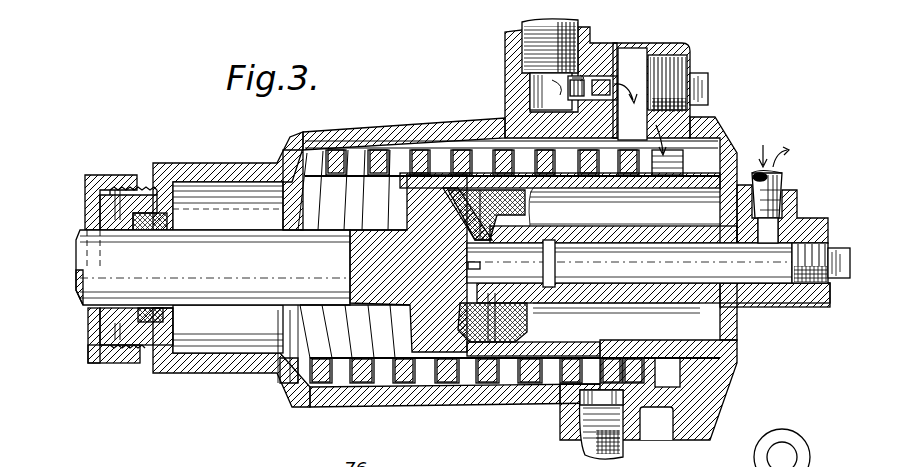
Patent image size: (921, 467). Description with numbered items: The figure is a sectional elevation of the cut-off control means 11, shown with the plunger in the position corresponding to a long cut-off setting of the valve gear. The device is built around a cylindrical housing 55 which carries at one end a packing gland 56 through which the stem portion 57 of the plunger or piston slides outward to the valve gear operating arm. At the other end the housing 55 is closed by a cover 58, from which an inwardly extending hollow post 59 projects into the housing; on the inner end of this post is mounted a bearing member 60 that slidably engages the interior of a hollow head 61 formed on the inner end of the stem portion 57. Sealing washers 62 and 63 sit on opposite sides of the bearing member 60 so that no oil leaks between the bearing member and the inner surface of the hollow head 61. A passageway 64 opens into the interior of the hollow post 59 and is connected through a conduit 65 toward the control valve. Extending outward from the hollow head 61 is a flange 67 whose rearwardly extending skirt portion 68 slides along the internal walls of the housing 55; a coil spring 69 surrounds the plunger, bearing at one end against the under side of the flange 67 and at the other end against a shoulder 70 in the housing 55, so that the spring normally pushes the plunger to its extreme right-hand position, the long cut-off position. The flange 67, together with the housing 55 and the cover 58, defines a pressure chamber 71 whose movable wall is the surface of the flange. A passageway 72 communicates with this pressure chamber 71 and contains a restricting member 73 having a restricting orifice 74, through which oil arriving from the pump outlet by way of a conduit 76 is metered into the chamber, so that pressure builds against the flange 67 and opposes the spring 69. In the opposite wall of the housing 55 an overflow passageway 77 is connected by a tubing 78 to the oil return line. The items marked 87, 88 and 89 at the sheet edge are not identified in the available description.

The cut-off control means 11 is at (432, 126).
The cylindrical housing 55 is at (430, 403).
The packing gland 56 is at (114, 176).
The stem portion 57 is at (222, 297).
The cover 58 is at (735, 151).
The hollow post 59 is at (600, 301).
The bearing member 60 is at (523, 207).
The hollow head 61 is at (670, 341).
The sealing washer 62 is at (468, 338).
The sealing washer 63 is at (527, 329).
The passageway 64 is at (797, 213).
The conduit 65 is at (786, 178).
The flange 67 is at (718, 131).
The skirt portion 68 is at (567, 402).
The coil spring 69 is at (463, 150).
The shoulder 70 is at (283, 153).
The pressure chamber 71 is at (662, 370).
The passageway 72 is at (653, 72).
The restricting member 73 is at (637, 77).
The restricting orifice 74 is at (580, 80).
The conduit 76 is at (525, 24).
The overflow passageway 77 is at (648, 413).
The tubing 78 is at (583, 442).
The ring 87 is at (690, 462).
The sealing ring 88 is at (799, 444).
The washer 89 is at (731, 462).